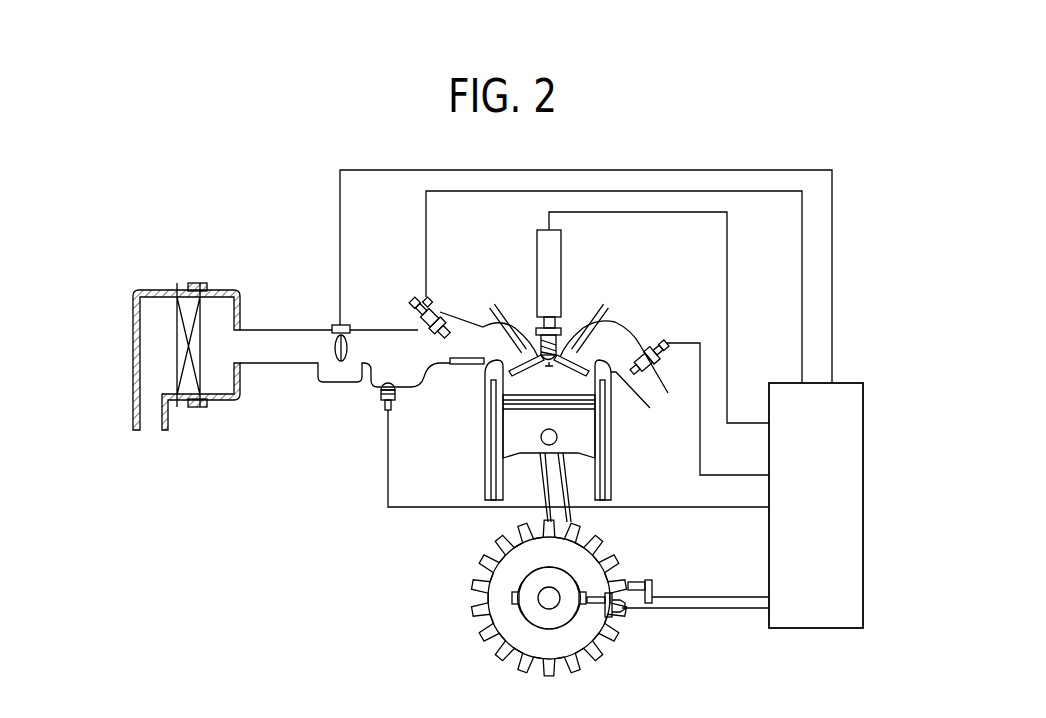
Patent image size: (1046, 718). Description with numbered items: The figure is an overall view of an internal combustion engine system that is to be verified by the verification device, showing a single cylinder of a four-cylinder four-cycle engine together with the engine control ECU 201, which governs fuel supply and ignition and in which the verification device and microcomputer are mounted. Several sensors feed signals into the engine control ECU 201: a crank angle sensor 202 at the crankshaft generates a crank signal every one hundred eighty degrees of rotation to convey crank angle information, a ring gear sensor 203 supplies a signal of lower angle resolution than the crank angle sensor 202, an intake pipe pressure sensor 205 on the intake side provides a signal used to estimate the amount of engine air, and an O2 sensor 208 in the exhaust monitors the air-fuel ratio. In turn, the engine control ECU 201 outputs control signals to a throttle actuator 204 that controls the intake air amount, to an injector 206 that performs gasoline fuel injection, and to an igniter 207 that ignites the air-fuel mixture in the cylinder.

The engine control ECU 201 is at (814, 628).
The crank angle sensor 202 is at (620, 620).
The ring gear sensor 203 is at (655, 586).
The throttle actuator 204 is at (334, 326).
The intake pipe pressure sensor 205 is at (384, 404).
The injector 206 is at (407, 297).
The igniter 207 is at (537, 266).
The O2 sensor 208 is at (657, 346).